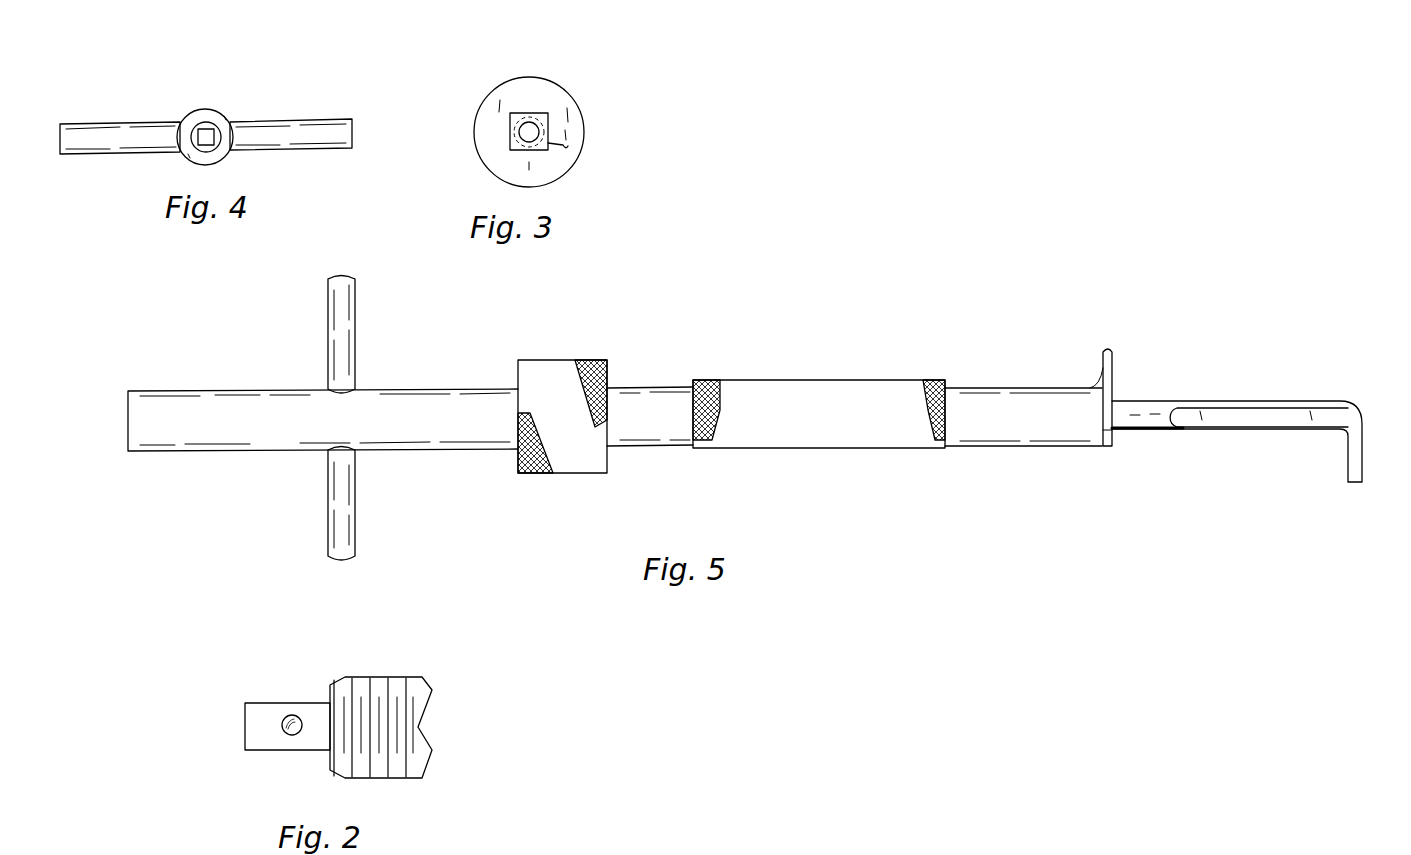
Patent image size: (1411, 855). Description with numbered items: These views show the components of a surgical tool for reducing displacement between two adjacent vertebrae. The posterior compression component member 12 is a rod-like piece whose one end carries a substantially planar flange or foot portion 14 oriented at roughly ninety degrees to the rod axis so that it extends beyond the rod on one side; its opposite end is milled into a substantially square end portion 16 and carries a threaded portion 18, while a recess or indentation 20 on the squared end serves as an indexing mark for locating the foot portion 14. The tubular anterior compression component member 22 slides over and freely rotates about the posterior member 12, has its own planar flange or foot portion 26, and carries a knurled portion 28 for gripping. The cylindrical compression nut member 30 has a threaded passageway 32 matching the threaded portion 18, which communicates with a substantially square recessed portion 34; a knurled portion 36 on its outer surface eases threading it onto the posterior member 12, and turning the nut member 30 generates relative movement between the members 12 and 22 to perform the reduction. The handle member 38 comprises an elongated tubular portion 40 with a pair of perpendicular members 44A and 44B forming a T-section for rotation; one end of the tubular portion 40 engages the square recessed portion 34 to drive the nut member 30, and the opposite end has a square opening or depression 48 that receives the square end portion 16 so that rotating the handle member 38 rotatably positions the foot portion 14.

In FIG. 5, the posterior compression component member 12 is at (1181, 431).
In FIG. 2, the posterior compression component member 12 is at (373, 709).
In FIG. 5, the flange or foot portion 14 is at (1362, 442).
In FIG. 2, the square end portion 16 is at (290, 750).
In FIG. 2, the threaded portion 18 is at (382, 682).
In FIG. 2, the recess or indentation 20 is at (290, 717).
In FIG. 5, the anterior compression component member 22 is at (834, 372).
In FIG. 5, the flange or foot portion 26 is at (1112, 360).
In FIG. 5, the knurled portion 28 is at (705, 383).
In FIG. 3, the compression nut member 30 is at (536, 102).
In FIG. 5, the compression nut member 30 is at (562, 411).
In FIG. 3, the threaded passageway 32 is at (520, 128).
In FIG. 3, the square recessed portion 34 is at (568, 146).
In FIG. 5, the knurled portion 36 is at (540, 473).
In FIG. 4, the handle member 38 is at (203, 107).
In FIG. 5, the handle member 38 is at (763, 401).
In FIG. 4, the tubular portion 40 is at (187, 162).
In FIG. 5, the tubular portion 40 is at (425, 390).
In FIG. 4, the first T-section member 44A is at (82, 124).
In FIG. 5, the first T-section member 44A is at (355, 298).
In FIG. 4, the second T-section member 44B is at (317, 120).
In FIG. 5, the second T-section member 44B is at (355, 518).
In FIG. 4, the opening or depression 48 is at (208, 124).